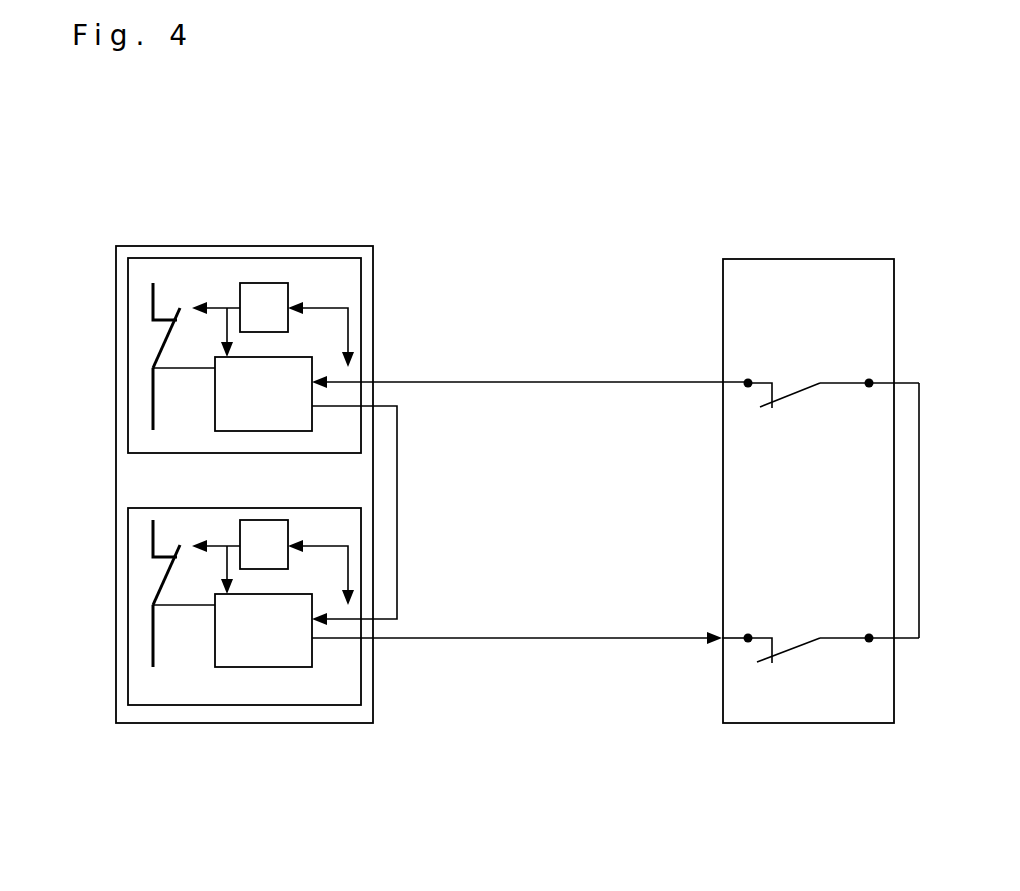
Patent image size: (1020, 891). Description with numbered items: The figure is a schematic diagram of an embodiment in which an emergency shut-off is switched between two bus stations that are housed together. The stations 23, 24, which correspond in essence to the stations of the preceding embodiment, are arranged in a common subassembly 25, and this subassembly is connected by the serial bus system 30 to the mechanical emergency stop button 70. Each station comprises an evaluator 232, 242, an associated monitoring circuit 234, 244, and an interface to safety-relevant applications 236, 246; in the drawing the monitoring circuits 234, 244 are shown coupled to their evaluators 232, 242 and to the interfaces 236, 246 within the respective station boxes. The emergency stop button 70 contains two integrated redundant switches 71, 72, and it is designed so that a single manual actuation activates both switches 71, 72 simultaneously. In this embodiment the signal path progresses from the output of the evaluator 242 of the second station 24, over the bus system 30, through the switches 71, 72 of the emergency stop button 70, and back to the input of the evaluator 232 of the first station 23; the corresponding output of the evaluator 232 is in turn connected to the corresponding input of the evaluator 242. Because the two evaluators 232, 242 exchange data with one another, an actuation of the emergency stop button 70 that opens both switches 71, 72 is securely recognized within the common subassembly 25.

The station 23 is at (128, 345).
The station 24 is at (128, 601).
The common subassembly 25 is at (225, 725).
The serial bus system 30 is at (518, 639).
The emergency stop button 70 is at (805, 726).
The switch 71 is at (800, 388).
The switch 72 is at (797, 645).
The evaluator 232 is at (290, 355).
The monitoring circuit 234 is at (265, 283).
The interface to safety-relevant applications 236 is at (160, 350).
The evaluator 242 is at (275, 667).
The monitoring circuit 244 is at (263, 520).
The interface to safety-relevant applications 246 is at (160, 588).